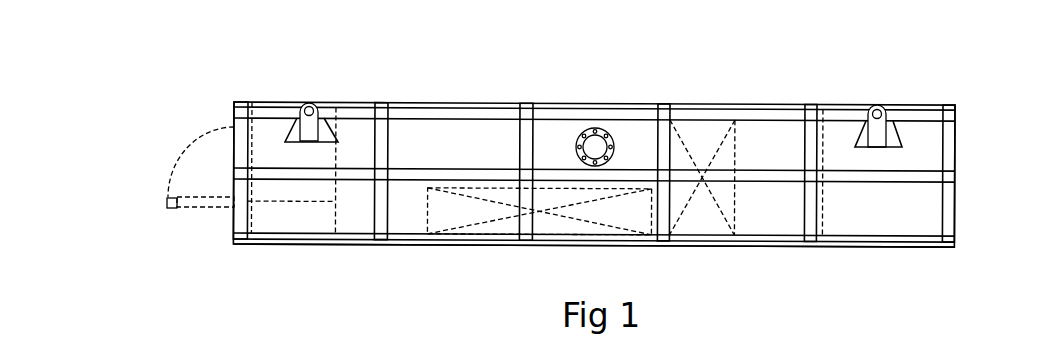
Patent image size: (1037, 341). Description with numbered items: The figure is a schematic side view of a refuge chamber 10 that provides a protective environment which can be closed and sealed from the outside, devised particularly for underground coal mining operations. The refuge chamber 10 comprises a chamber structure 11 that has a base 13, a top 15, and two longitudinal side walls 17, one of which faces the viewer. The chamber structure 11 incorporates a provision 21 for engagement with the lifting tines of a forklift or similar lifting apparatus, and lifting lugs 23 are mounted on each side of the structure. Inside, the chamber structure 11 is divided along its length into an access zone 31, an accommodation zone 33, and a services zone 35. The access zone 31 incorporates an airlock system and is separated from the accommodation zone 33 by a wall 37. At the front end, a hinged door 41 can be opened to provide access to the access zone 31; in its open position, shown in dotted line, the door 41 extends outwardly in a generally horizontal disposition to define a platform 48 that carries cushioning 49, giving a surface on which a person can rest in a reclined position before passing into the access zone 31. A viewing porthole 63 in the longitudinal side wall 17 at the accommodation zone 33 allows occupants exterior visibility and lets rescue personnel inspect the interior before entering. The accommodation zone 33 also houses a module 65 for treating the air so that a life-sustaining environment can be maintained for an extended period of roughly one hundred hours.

The refuge chamber 10 is at (167, 136).
The chamber structure 11 is at (783, 97).
The base 13 is at (867, 243).
The top 15 is at (734, 102).
The longitudinal side wall 17 is at (922, 207).
The provision for engagement with lifting tines 21 is at (508, 104).
The lifting lug 23 is at (306, 103).
The access zone 31 is at (317, 218).
The accommodation zone 33 is at (415, 213).
The services zone 35 is at (897, 222).
The wall 37 is at (337, 143).
The door 41 is at (195, 208).
The platform 48 is at (167, 200).
The cushioning 49 is at (178, 198).
The viewing porthole 63 is at (595, 133).
The module 65 is at (687, 220).